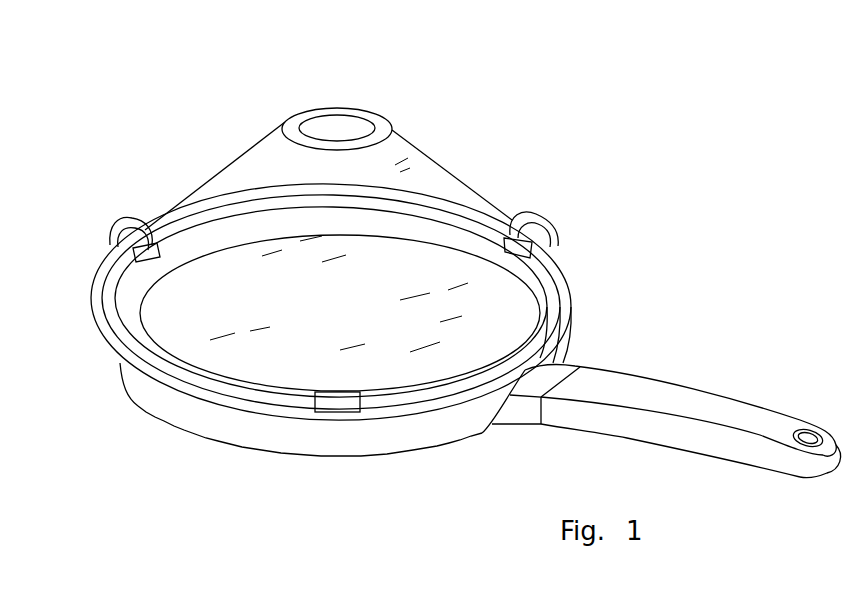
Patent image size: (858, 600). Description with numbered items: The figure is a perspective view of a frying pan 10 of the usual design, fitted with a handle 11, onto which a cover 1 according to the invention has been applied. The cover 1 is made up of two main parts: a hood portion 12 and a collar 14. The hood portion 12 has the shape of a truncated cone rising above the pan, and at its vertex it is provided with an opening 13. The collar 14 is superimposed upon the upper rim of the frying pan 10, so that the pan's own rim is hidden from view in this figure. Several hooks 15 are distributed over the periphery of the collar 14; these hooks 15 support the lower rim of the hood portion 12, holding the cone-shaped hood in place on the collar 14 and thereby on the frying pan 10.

The cover 1 is at (155, 120).
The frying pan 10 is at (412, 432).
The handle 11 is at (678, 398).
The hood portion 12 is at (258, 165).
The opening 13 is at (364, 120).
The collar 14 is at (558, 267).
The hooks 15 is at (125, 227).